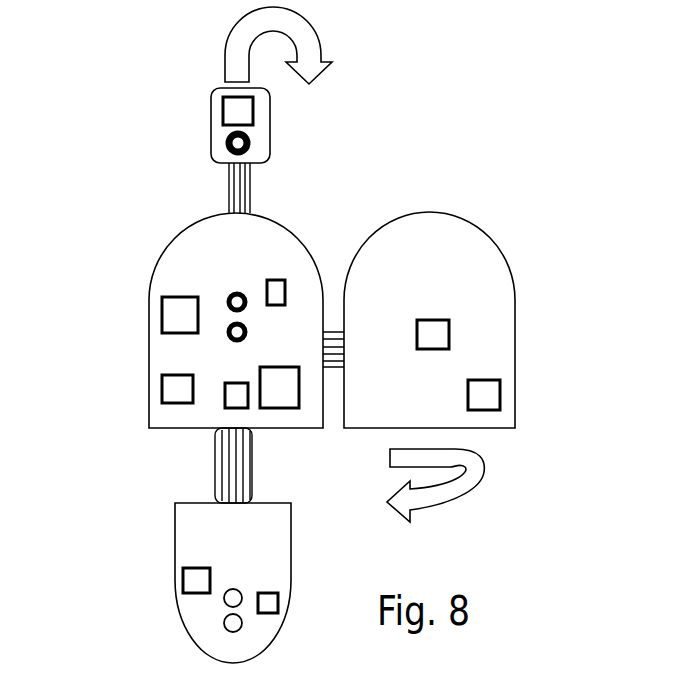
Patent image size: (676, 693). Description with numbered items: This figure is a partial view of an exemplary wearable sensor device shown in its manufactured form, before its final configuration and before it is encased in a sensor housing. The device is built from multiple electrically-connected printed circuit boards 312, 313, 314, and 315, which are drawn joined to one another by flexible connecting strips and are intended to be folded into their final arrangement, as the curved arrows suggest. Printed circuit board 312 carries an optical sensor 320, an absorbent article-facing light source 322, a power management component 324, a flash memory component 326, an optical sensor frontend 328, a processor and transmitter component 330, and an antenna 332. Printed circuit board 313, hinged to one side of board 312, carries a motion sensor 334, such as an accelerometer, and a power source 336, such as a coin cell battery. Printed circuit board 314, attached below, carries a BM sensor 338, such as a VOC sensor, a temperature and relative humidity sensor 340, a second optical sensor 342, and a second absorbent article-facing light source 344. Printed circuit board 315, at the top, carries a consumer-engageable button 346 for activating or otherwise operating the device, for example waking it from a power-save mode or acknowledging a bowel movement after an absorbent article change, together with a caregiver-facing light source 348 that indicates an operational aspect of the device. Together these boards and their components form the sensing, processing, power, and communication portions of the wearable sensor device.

The printed circuit board 312 is at (148, 335).
The printed circuit board 313 is at (437, 212).
The printed circuit board 314 is at (176, 555).
The printed circuit board 315 is at (272, 143).
The optical sensor 320 is at (228, 296).
The absorbent article-facing light source 322 is at (226, 325).
The power management component 324 is at (276, 280).
The flash memory component 326 is at (299, 400).
The optical sensor frontend 328 is at (248, 405).
The processor and transmitter component 330 is at (162, 393).
The antenna 332 is at (162, 312).
The motion sensor 334 is at (500, 405).
The power source 336 is at (449, 327).
The BM sensor 338 is at (183, 587).
The temperature and relative humidity sensor 340 is at (265, 598).
The second optical sensor 342 is at (224, 598).
The second absorbent article-facing light source 344 is at (243, 628).
The consumer-engageable button 346 is at (222, 108).
The caregiver-facing light source 348 is at (226, 143).